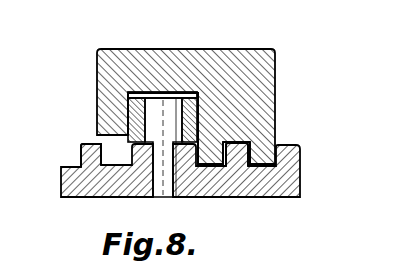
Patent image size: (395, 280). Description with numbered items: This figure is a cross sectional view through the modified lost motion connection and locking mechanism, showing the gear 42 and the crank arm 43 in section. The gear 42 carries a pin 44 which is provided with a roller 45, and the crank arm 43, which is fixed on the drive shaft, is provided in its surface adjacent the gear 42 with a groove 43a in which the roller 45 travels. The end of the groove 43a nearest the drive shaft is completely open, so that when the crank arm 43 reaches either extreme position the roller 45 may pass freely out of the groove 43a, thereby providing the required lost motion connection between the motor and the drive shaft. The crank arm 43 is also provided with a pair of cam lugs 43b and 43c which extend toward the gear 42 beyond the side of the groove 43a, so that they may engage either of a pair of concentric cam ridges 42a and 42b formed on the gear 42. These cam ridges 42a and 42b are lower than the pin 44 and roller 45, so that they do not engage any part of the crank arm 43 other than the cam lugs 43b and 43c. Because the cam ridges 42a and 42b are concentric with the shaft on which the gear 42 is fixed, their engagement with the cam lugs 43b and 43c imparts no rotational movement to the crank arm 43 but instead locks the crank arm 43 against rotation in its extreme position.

The gear 42 is at (302, 151).
The cam ridge 42a is at (243, 142).
The cam ridge 42b is at (93, 147).
The crank arm 43 is at (152, 24).
The groove 43a is at (205, 102).
The cam lug 43b is at (207, 165).
The cam lug 43c is at (262, 165).
The pin 44 is at (157, 125).
The roller 45 is at (128, 108).